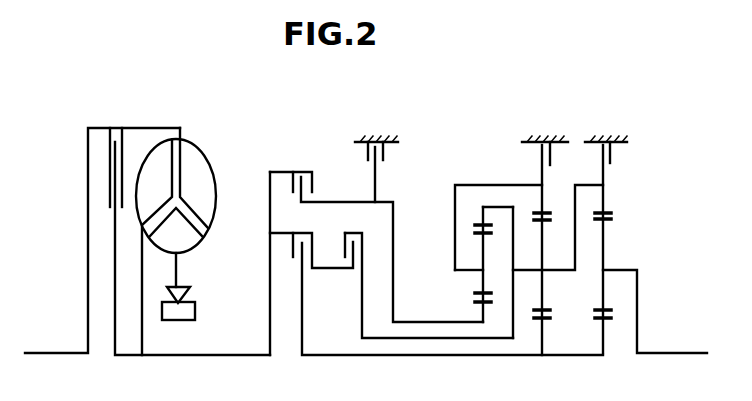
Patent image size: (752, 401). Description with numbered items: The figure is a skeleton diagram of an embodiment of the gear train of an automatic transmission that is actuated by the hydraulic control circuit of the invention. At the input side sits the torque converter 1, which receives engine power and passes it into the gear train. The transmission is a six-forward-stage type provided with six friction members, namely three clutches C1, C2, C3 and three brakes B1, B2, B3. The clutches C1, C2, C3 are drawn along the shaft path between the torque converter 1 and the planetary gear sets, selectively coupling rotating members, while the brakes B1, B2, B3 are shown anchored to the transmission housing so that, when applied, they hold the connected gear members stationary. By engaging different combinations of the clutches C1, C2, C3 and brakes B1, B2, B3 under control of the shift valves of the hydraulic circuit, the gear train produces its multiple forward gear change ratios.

The torque converter 1 is at (211, 163).
The clutch C1 is at (436, 283).
The clutch C2 is at (376, 251).
The clutch C3 is at (427, 274).
The brake B1 is at (376, 157).
The brake B2 is at (545, 234).
The brake B3 is at (606, 233).